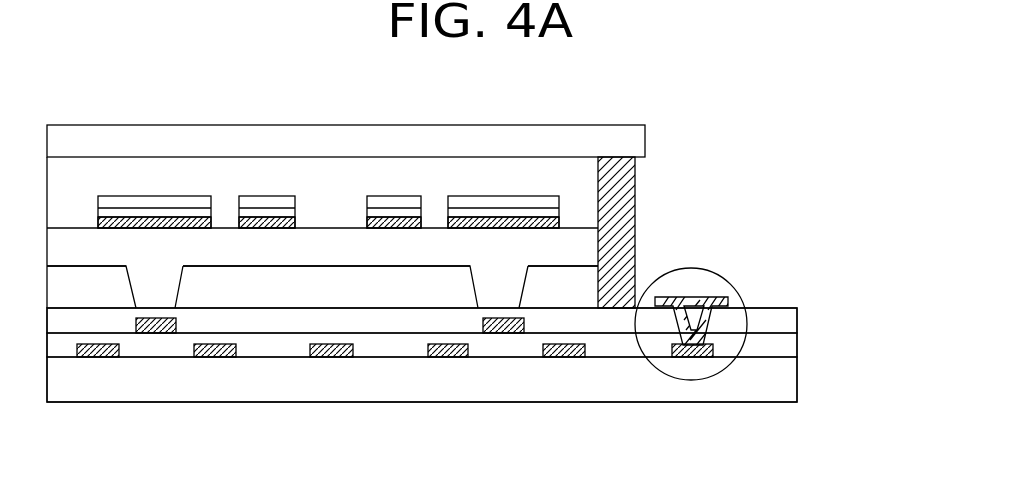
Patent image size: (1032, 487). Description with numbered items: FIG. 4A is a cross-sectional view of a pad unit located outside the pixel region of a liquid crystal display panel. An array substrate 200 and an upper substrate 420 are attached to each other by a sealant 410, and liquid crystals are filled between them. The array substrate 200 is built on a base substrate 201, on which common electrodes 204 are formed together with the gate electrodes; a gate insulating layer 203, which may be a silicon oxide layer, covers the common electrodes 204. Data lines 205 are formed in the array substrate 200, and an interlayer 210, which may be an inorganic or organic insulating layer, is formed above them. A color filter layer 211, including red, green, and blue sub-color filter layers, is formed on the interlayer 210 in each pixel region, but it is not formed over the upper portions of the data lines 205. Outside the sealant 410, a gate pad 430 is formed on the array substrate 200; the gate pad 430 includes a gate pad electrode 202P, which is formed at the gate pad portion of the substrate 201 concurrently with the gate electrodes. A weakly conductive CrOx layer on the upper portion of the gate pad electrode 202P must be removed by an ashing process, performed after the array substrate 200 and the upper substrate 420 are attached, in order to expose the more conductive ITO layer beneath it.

The upper substrate 420 is at (633, 143).
The sealant 410 is at (633, 200).
The gate pad 430 is at (722, 275).
The interlayer 210 is at (787, 318).
The gate insulating layer 203 is at (787, 343).
The substrate 201 is at (787, 377).
The array substrate 200 is at (860, 302).
The common electrodes 204 is at (96, 357).
The data lines 205 is at (157, 333).
The color filter layer 211 is at (392, 290).
The gate pad electrode 202P is at (693, 357).